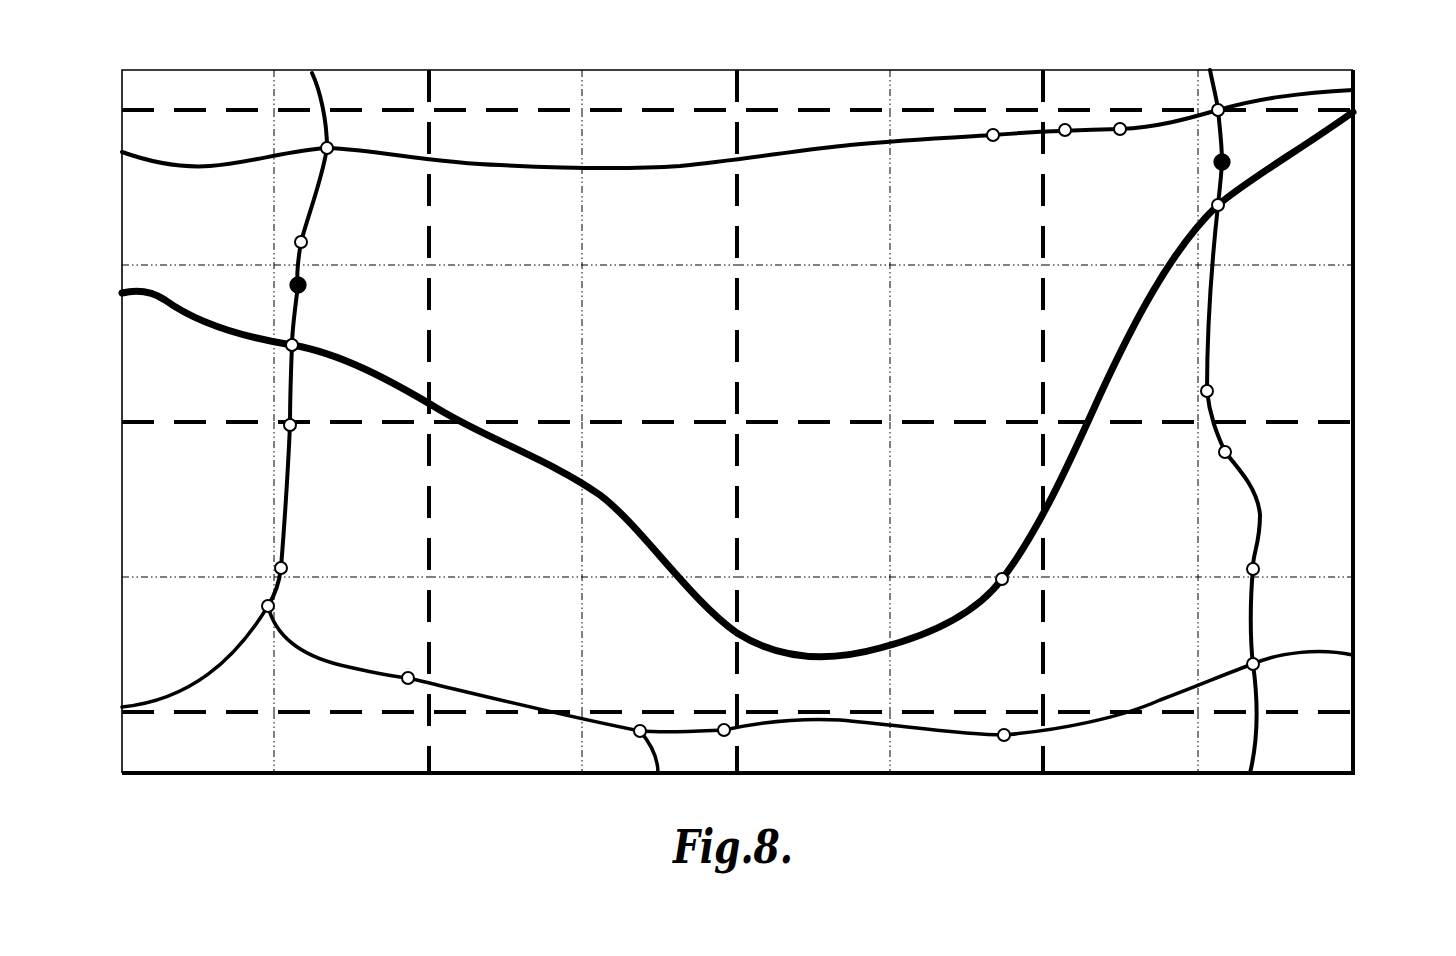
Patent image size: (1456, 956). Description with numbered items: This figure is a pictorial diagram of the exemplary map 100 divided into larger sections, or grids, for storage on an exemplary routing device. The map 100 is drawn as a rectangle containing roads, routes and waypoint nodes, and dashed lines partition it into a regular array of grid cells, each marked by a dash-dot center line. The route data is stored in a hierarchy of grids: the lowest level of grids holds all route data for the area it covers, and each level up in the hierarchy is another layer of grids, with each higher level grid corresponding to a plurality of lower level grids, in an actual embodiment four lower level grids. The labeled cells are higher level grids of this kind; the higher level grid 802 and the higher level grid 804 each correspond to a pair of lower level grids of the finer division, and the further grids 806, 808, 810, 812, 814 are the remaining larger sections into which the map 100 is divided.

The map 100 is at (772, 70).
The higher level grid 802 is at (276, 294).
The higher level grid 804 is at (536, 124).
The map tile 806 is at (918, 124).
The map tile 808 is at (1321, 228).
The map tile 810 is at (606, 671).
The map tile 812 is at (988, 671).
The map tile 814 is at (1324, 518).